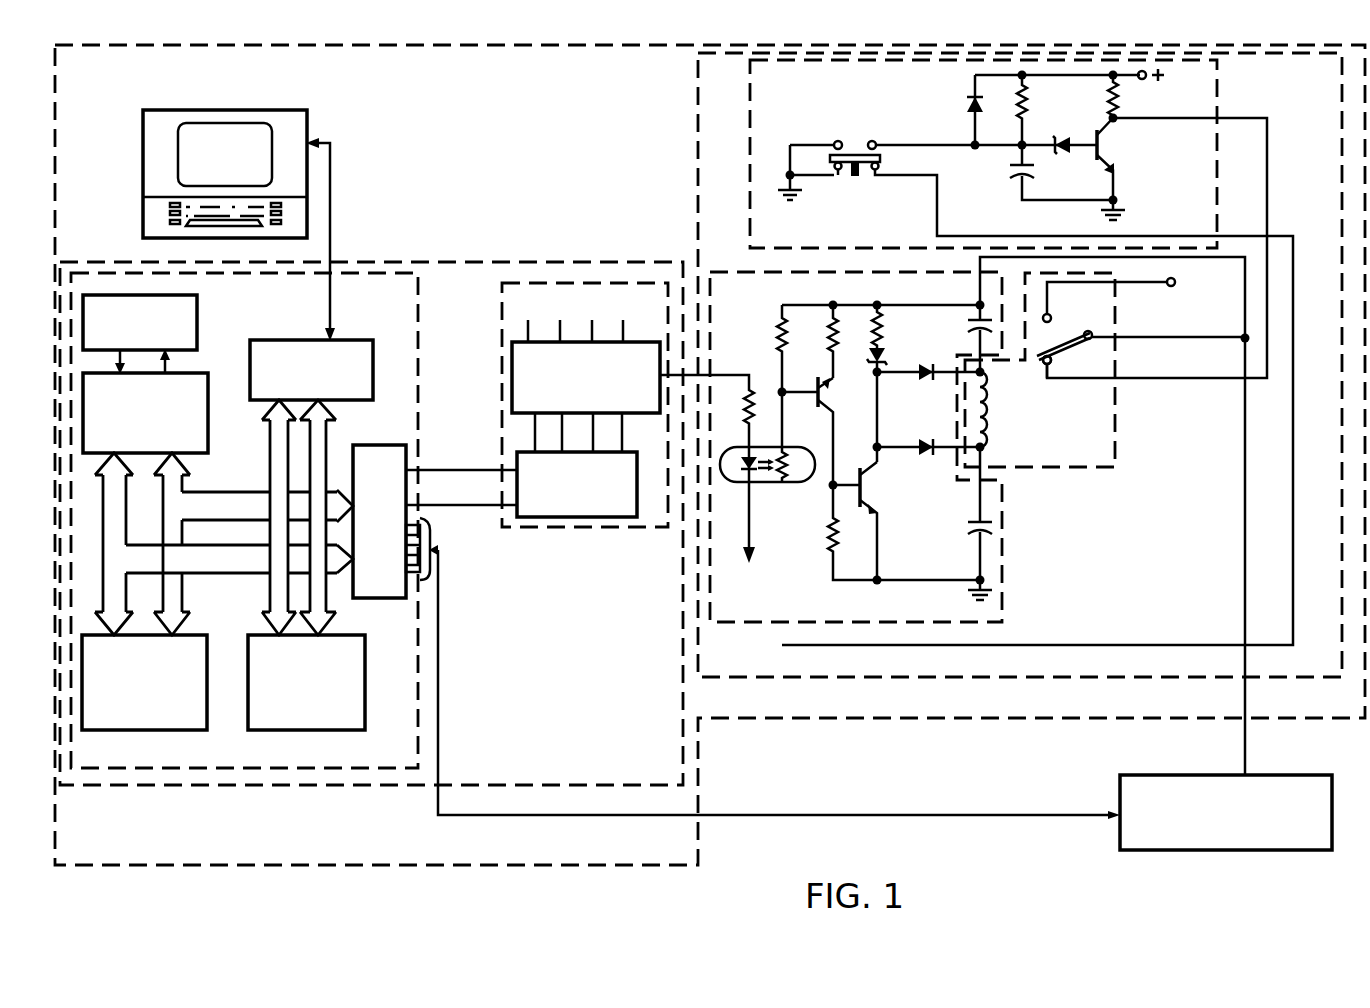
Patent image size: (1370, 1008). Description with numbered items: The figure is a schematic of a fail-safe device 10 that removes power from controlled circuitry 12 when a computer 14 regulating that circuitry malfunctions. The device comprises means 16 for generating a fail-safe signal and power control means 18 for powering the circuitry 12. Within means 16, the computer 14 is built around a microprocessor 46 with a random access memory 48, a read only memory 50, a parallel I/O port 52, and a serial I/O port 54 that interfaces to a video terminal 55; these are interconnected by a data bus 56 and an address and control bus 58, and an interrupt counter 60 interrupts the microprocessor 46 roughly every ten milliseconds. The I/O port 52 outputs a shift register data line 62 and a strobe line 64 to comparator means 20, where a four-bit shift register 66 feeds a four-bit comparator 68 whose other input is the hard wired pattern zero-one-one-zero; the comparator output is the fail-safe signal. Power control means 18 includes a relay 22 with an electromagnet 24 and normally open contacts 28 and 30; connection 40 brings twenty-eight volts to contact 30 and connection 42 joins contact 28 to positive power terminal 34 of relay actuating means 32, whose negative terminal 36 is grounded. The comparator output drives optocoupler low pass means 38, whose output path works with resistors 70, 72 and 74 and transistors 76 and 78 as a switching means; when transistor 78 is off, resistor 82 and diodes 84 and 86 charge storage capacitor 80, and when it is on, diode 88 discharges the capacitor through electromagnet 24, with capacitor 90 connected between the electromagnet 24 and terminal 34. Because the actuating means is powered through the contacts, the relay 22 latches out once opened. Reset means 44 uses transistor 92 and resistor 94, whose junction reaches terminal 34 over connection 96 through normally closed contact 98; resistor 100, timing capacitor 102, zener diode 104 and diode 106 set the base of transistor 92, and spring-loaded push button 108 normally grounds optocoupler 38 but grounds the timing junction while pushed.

The fail-safe device 10 is at (393, 866).
The controlled circuitry 12 is at (1335, 792).
The computer 14 is at (356, 270).
The means for generating a fail-safe signal 16 is at (468, 264).
The power control means 18 is at (697, 118).
The comparator means 20 is at (502, 380).
The electromechanical relay 22 is at (1115, 415).
The electromagnet 24 is at (992, 415).
The normally open relay contact 28 is at (1062, 349).
The normally open relay contact 30 is at (1052, 316).
The relay actuating means 32 is at (731, 270).
The positive power terminal 34 is at (858, 305).
The negative power terminal 36 is at (968, 594).
The low pass means 38 is at (795, 483).
The connection 40 is at (1137, 288).
The connection 42 is at (1197, 258).
The reset means 44 is at (750, 128).
The microprocessor 46 is at (208, 425).
The random access memory 48 is at (207, 650).
The read only memory 50 is at (248, 686).
The parallel I/O port 52 is at (384, 425).
The serial I/O port 54 is at (304, 320).
The video terminal 55 is at (307, 125).
The data bus 56 is at (208, 585).
The address and control bus 58 is at (207, 491).
The interrupt counter 60 is at (197, 318).
The shift register data line 62 is at (428, 468).
The shift register strobe line 64 is at (450, 507).
The shift register 66 is at (560, 517).
The comparator circuit 68 is at (512, 356).
The resistor 70 is at (776, 338).
The resistor 72 is at (829, 336).
The resistor 74 is at (828, 538).
The PNP transistor 76 is at (818, 408).
The NPN transistor 78 is at (870, 484).
The storage capacitor 80 is at (996, 520).
The resistor 82 is at (884, 326).
The diode 84 is at (886, 357).
The diode 86 is at (926, 439).
The diode 88 is at (926, 382).
The capacitor 90 is at (972, 314).
The transistor 92 is at (1095, 152).
The resistor 94 is at (1120, 93).
The connection 96 is at (1268, 194).
The normally closed contact 98 is at (1043, 365).
The resistor 100 is at (1032, 94).
The timing capacitor 102 is at (1020, 178).
The zener diode 104 is at (1068, 136).
The diode 106 is at (963, 104).
The push button 108 is at (855, 178).